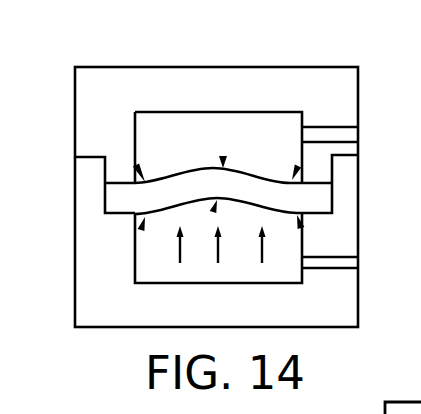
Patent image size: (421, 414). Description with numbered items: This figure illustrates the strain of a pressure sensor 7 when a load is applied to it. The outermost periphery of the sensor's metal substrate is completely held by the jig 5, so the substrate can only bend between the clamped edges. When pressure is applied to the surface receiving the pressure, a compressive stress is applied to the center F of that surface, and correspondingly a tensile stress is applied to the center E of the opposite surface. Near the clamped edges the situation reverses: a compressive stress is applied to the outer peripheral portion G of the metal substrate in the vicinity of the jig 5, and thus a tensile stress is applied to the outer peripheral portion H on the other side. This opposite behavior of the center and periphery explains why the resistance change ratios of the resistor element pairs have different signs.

The jig 5 is at (340, 227).
The pressure sensor 7 is at (303, 198).
The center of opposite surface E is at (223, 157).
The center of pressure-receiving surface F is at (213, 212).
The outer peripheral portion near jig G is at (136, 165).
The outer peripheral portion H is at (141, 230).